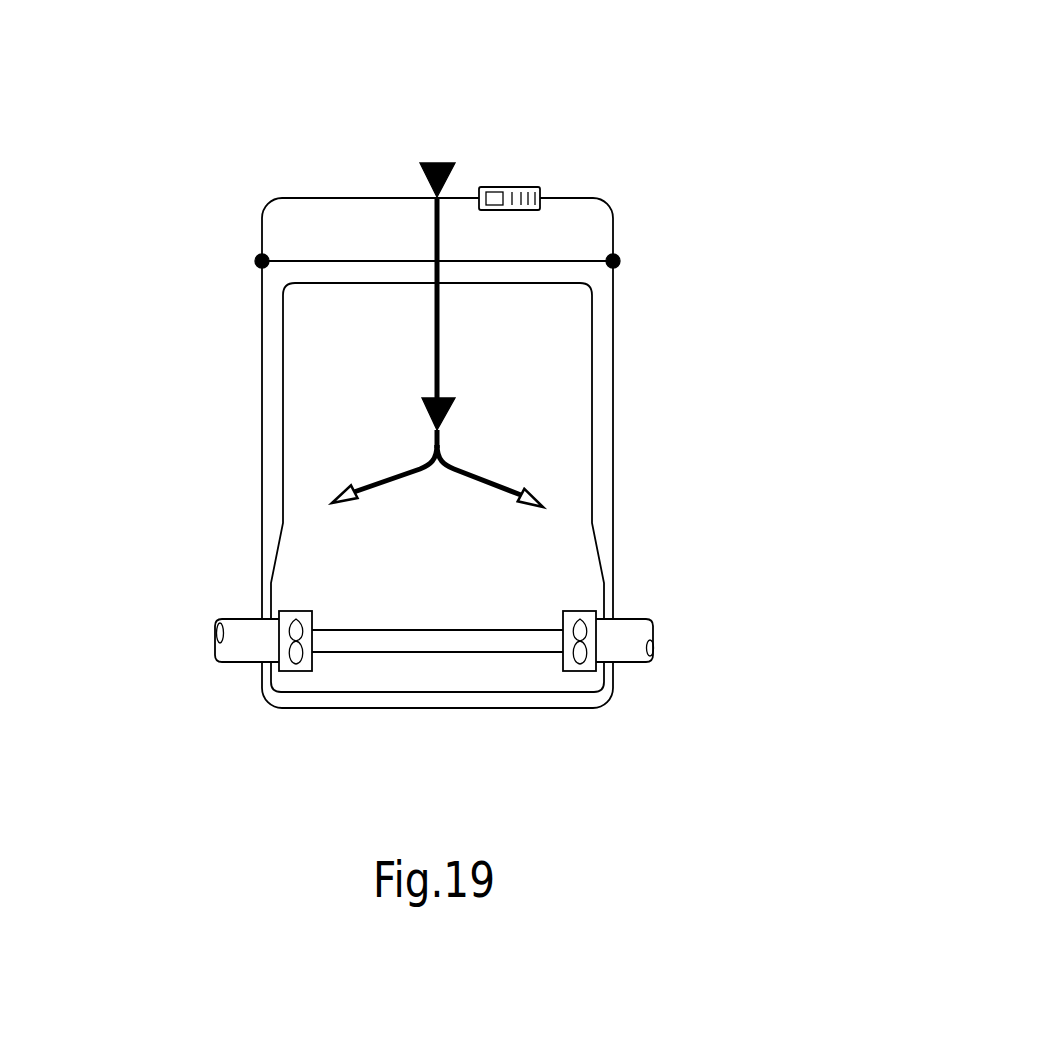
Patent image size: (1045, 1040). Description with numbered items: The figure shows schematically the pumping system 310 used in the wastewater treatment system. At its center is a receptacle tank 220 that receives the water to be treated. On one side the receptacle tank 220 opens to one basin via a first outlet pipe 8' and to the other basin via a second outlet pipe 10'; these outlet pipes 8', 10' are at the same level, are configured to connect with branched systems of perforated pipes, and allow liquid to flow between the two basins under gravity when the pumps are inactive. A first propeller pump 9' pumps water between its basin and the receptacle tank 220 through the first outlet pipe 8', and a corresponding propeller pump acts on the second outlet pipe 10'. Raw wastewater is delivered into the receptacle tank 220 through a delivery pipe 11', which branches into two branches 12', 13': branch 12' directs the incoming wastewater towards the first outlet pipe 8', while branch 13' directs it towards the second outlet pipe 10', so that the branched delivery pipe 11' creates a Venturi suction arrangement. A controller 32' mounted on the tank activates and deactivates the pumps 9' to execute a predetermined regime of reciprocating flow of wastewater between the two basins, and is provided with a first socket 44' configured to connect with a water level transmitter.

The delivery pipe 11' is at (401, 209).
The controller 32' is at (565, 142).
The pumping system 310 is at (682, 113).
The first socket 44' is at (499, 209).
The first branch 12' is at (574, 403).
The second branch 13' is at (316, 416).
The receptacle tank 220 is at (320, 575).
The second outlet pipe 10' is at (202, 640).
The first outlet pipe 8' is at (500, 681).
The first propeller pump 9' is at (437, 706).